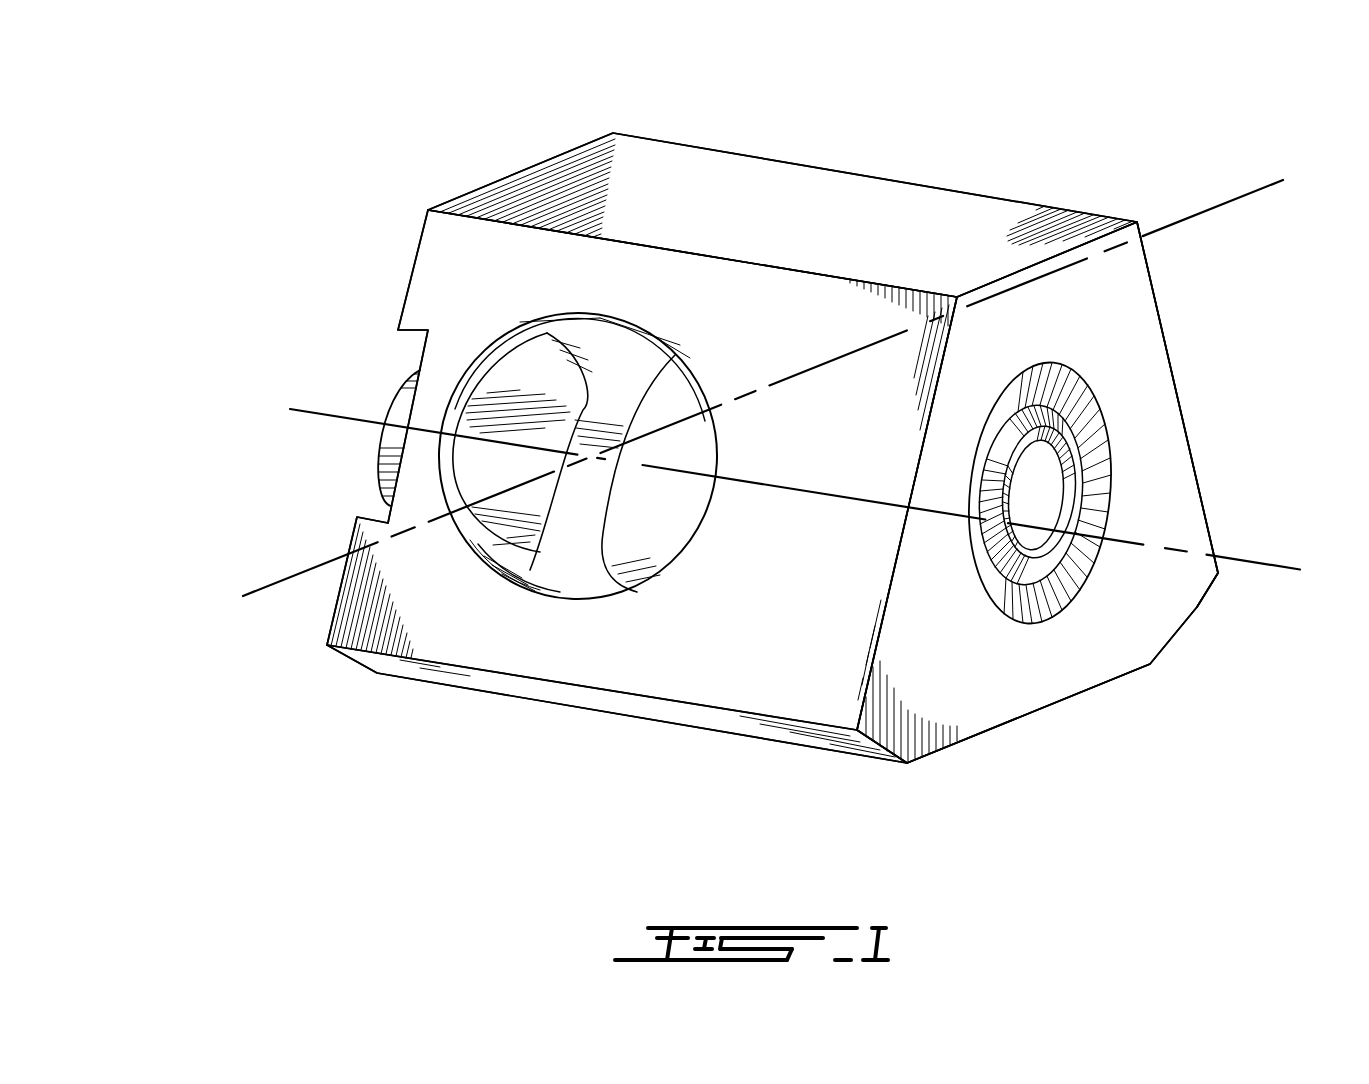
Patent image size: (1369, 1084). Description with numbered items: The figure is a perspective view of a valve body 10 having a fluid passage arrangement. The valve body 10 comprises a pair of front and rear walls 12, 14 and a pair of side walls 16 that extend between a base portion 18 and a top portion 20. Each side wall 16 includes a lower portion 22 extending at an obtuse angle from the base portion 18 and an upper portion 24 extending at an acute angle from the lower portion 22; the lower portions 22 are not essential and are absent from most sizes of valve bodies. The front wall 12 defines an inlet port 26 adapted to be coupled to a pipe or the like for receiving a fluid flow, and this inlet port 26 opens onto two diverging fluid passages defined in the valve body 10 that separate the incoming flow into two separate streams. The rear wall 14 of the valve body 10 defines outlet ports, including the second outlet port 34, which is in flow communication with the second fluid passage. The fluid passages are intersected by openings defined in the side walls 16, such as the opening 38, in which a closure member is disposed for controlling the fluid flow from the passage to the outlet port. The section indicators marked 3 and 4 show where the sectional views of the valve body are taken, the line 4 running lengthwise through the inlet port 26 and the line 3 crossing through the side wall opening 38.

The valve body 10 is at (1192, 773).
The front wall 12 is at (1172, 492).
The rear wall 14 is at (412, 272).
The side wall 16 is at (1155, 287).
The base portion 18 is at (1062, 703).
The top portion 20 is at (840, 200).
The lower portion 22 is at (747, 722).
The upper portion 24 is at (760, 643).
The inlet port 26 is at (1050, 490).
The second outlet port 34 is at (392, 400).
The opening 38 is at (577, 565).
The section line 3- 3 is at (305, 498).
The section line 4- 4 is at (152, 573).